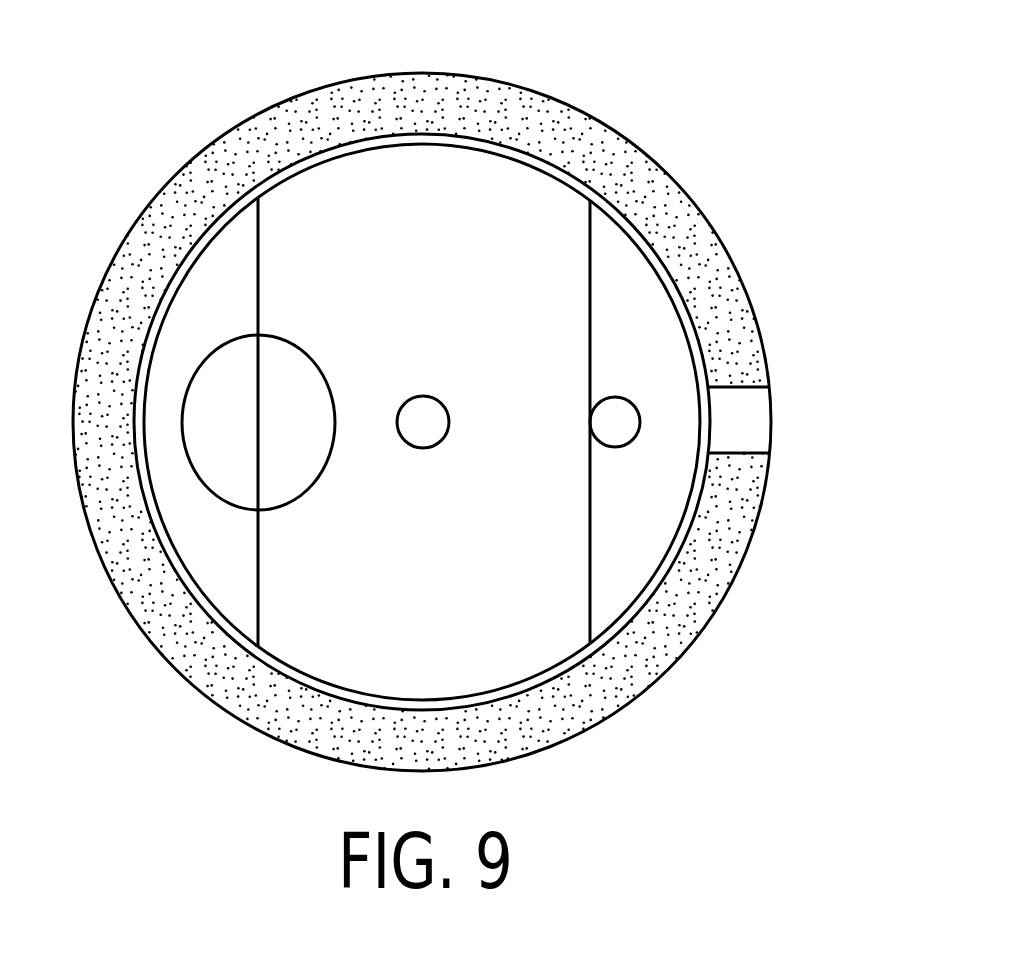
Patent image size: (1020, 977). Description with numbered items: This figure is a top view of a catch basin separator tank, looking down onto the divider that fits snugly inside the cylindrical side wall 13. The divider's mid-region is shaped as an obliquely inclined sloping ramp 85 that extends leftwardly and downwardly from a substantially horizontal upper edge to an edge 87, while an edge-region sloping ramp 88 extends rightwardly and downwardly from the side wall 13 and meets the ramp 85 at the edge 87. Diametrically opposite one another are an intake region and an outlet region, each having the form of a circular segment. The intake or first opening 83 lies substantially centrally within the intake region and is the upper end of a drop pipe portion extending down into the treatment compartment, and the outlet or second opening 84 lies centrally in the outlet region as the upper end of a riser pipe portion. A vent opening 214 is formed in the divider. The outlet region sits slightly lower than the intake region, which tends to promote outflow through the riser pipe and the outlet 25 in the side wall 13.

The cylindrical side wall 13 is at (590, 110).
The outlet 25 is at (773, 428).
The first opening 83 is at (293, 503).
The second opening 84 is at (614, 397).
The sloping ramp 85 is at (418, 172).
The edge 87 is at (257, 237).
The sloping ramp 88 is at (182, 347).
The vent opening 214 is at (423, 448).